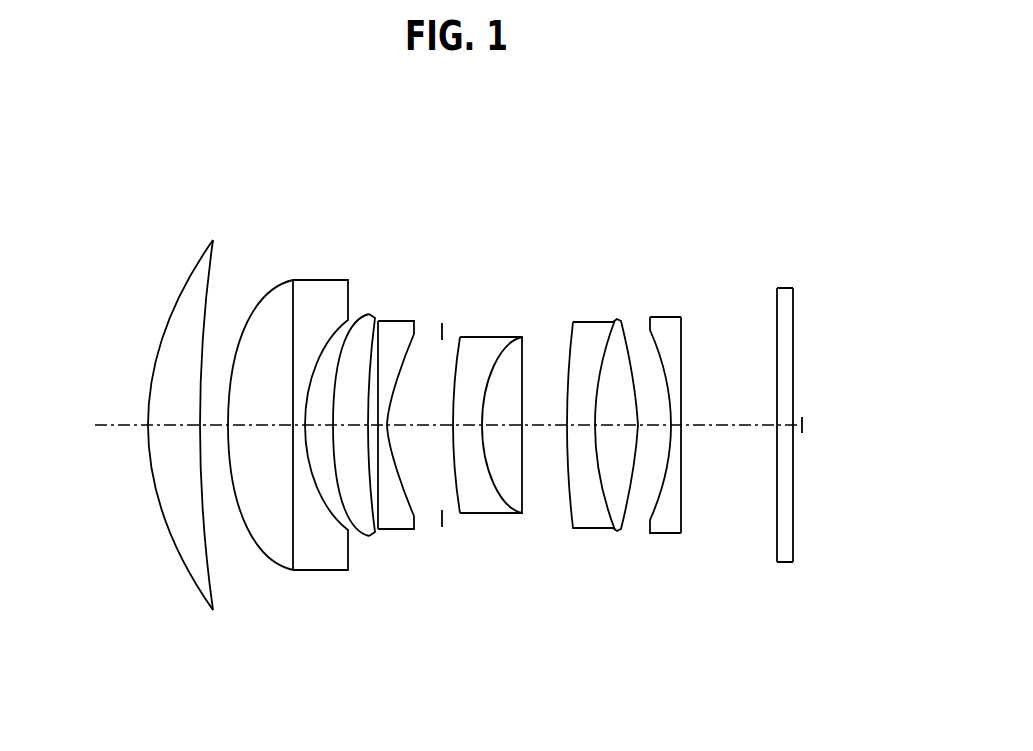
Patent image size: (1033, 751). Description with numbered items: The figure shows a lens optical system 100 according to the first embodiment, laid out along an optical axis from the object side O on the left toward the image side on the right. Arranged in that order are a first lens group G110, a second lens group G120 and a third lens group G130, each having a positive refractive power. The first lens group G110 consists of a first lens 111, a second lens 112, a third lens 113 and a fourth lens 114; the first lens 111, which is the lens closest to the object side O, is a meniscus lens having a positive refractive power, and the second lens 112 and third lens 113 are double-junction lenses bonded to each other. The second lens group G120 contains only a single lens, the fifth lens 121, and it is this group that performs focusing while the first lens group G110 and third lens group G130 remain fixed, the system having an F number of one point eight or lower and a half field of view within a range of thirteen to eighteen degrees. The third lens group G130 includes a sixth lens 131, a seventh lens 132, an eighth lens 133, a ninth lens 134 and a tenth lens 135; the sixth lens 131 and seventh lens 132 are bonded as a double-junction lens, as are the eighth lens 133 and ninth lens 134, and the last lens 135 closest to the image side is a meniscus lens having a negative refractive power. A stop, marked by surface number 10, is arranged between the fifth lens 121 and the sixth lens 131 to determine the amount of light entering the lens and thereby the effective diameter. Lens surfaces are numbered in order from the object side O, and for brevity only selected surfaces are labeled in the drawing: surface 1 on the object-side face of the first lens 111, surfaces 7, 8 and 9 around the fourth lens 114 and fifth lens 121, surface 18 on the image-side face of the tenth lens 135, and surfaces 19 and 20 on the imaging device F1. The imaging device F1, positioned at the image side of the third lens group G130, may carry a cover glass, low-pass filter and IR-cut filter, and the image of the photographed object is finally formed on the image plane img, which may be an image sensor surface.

The lens optical system 100 is at (716, 133).
The first lens group G110 is at (377, 213).
The second lens group G120 is at (420, 213).
The third lens group G130 is at (730, 213).
The first lens 111 is at (180, 441).
The second lens 112 is at (290, 566).
The third lens 113 is at (321, 567).
The fourth lens 114 is at (359, 445).
The fifth lens 121 is at (407, 459).
The sixth lens 131 is at (492, 489).
The seventh lens 132 is at (512, 485).
The eighth lens 133 is at (593, 530).
The ninth lens 134 is at (617, 532).
The tenth lens 135 is at (679, 459).
The lens surface 1 is at (178, 297).
The lens surface 7 is at (369, 311).
The lens surface 8 is at (379, 326).
The lens surface 9 is at (415, 330).
The lens surface 10 is at (445, 322).
The lens surface 18 is at (683, 330).
The lens surface 19 is at (776, 300).
The lens surface 20 is at (794, 300).
The imaging device F1 is at (784, 446).
The image plane img is at (795, 354).
The object side O is at (435, 425).